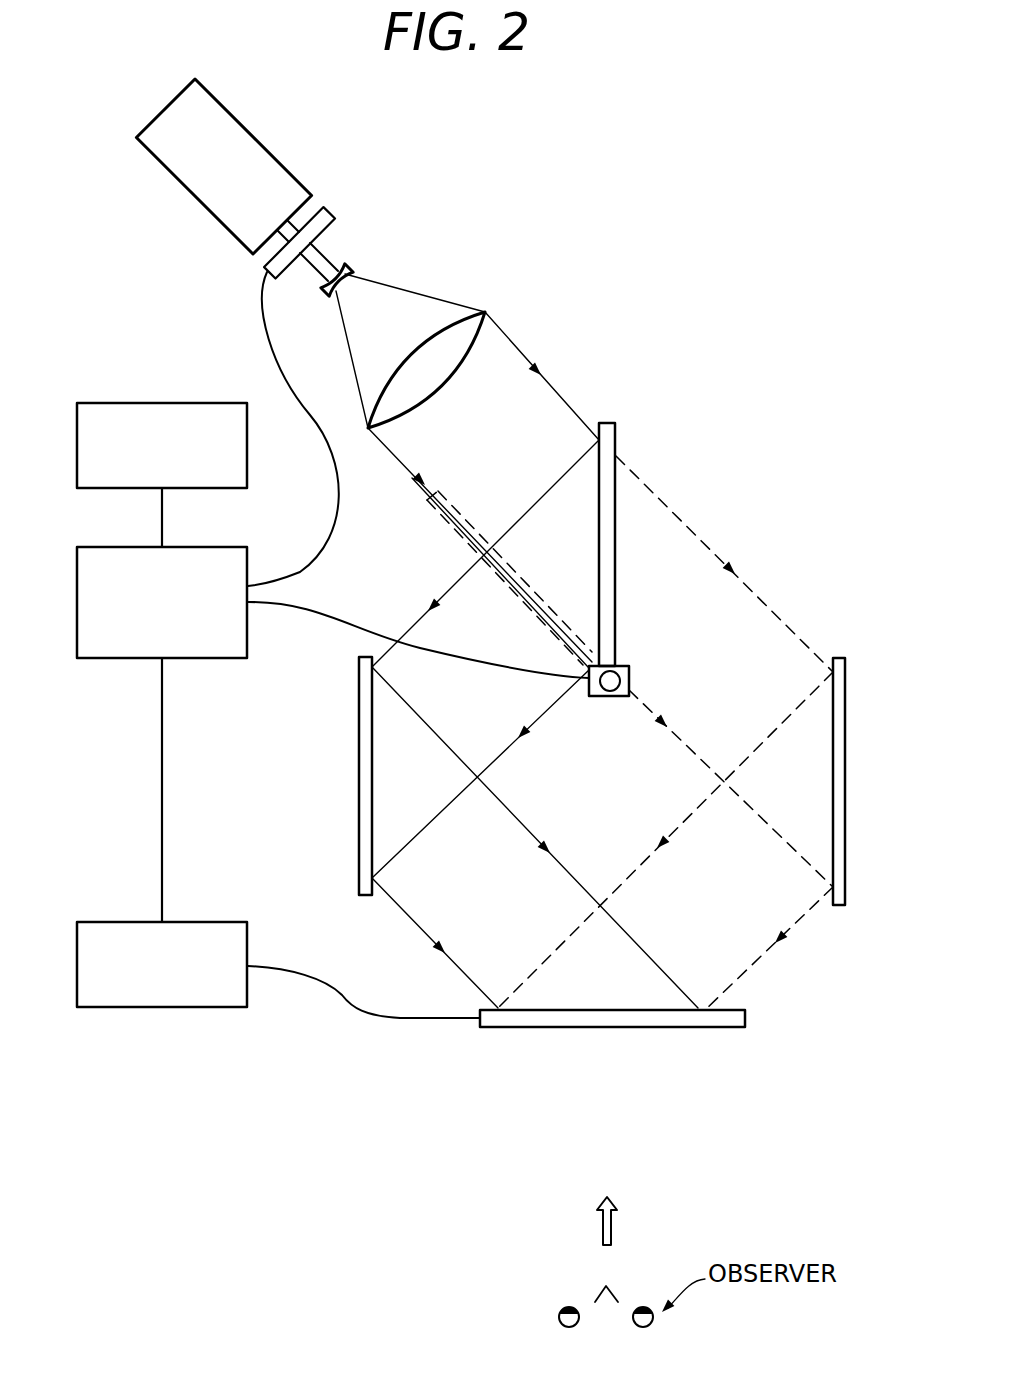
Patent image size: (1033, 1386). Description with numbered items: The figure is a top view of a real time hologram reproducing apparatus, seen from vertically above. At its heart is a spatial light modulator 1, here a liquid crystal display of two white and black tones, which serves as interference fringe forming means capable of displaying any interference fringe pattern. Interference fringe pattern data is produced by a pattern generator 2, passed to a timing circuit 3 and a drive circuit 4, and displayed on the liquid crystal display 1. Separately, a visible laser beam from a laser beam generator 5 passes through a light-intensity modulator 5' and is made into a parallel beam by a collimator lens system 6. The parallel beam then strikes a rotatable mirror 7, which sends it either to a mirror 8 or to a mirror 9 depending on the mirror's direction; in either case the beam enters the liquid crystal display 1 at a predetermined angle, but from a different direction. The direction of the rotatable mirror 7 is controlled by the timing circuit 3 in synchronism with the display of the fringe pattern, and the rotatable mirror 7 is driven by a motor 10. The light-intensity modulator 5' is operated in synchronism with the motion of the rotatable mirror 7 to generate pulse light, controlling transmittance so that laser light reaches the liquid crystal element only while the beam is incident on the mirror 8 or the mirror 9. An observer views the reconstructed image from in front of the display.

The spatial light modulator 1 is at (716, 1028).
The pattern generator 2 is at (250, 446).
The timing circuit 3 is at (250, 575).
The drive circuit 4 is at (250, 945).
The laser beam generator 5 is at (229, 166).
The light-intensity modulator 5' is at (334, 212).
The collimator lens system 6 is at (505, 303).
The rotatable mirror 7 is at (605, 422).
The mirror 8 is at (358, 697).
The mirror 9 is at (846, 670).
The motor 10 is at (610, 681).